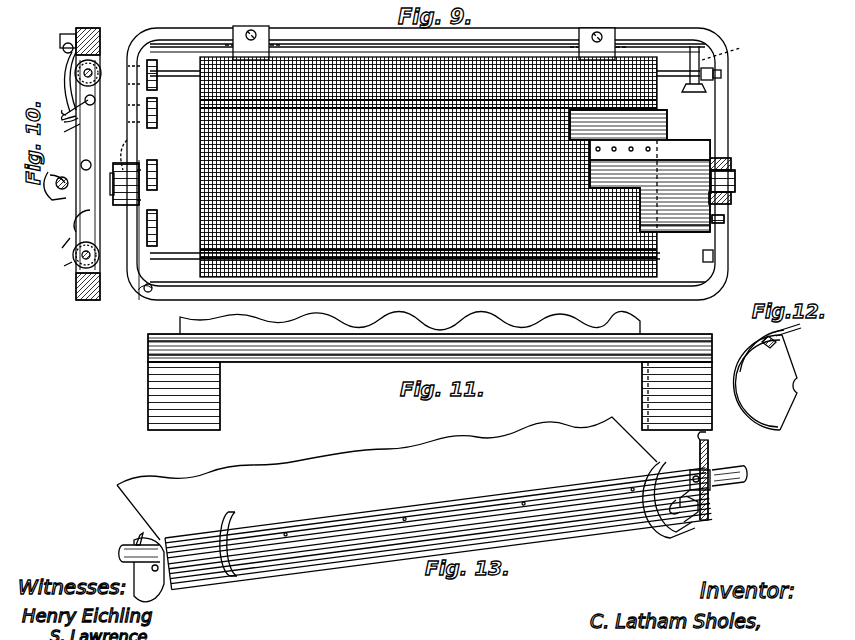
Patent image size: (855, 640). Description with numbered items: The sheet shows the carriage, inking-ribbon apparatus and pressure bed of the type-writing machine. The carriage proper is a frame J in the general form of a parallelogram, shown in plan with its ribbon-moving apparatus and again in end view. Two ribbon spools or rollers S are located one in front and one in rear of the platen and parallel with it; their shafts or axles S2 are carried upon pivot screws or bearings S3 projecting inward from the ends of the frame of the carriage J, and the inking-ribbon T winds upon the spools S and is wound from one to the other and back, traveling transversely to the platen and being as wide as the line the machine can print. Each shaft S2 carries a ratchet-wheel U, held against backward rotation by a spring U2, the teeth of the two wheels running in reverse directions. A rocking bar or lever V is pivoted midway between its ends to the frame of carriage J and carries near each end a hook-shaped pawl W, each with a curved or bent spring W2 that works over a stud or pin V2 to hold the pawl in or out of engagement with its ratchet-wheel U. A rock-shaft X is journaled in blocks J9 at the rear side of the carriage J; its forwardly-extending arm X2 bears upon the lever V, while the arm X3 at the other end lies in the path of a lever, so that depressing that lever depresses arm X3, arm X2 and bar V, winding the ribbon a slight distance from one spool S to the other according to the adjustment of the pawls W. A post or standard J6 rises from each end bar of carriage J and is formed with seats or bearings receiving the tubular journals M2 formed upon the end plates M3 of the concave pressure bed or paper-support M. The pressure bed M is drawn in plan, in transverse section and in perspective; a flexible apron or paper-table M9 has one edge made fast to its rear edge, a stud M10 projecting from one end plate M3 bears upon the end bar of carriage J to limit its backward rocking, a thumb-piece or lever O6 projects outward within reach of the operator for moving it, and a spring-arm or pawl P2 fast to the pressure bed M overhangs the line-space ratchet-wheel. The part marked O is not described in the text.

In FIG. 9, the carriage frame J is at (423, 158).
In FIG. 10, the carriage frame J is at (87, 173).
In FIG. 9, the post or standard J6 is at (743, 164).
In FIG. 9, the journal block J9 is at (262, 20).
In FIG. 9, the inking-ribbon T is at (428, 167).
In FIG. 9, the ribbon spool or roller S is at (509, 162).
In FIG. 9, the spool shaft or axle S2 is at (425, 165).
In FIG. 9, the pivot screw or bearing S3 is at (721, 74).
In FIG. 9, the rock-shaft X is at (178, 48).
In FIG. 10, the rock-shaft X is at (62, 46).
In FIG. 10, the forwardly-extending arm X2 is at (120, 92).
In FIG. 9, the arm X3 is at (735, 48).
In FIG. 9, the ratchet-wheel U is at (158, 66).
In FIG. 10, the ratchet-wheel U is at (75, 75).
In FIG. 9, the spring U2 is at (142, 292).
In FIG. 10, the spring U2 is at (70, 268).
In FIG. 9, the rocking bar or lever V is at (140, 183).
In FIG. 10, the rocking bar or lever V is at (66, 174).
In FIG. 9, the stud or pin V2 is at (158, 120).
In FIG. 10, the stud or pin V2 is at (91, 215).
In FIG. 10, the hook-shaped pawl W is at (68, 105).
In FIG. 10, the curved or bent spring W2 is at (76, 144).
In FIG. 9, the pressure bed or paper-support M is at (640, 171).
In FIG. 11, the pressure bed or paper-support M is at (534, 360).
In FIG. 13, the pressure bed or paper-support M is at (215, 595).
In FIG. 9, the tubular journal M2 is at (735, 182).
In FIG. 13, the tubular journal M2 is at (120, 552).
In FIG. 12, the end plate M3 is at (765, 380).
In FIG. 13, the end plate M3 is at (182, 639).
In FIG. 11, the flexible apron or paper-table M9 is at (555, 330).
In FIG. 12, the flexible apron or paper-table M9 is at (791, 336).
In FIG. 13, the flexible apron or paper-table M9 is at (387, 478).
In FIG. 9, the stud M10 is at (724, 220).
In FIG. 13, the paper guide ring O is at (236, 514).
In FIG. 13, the thumb-piece or lever O6 is at (720, 508).
In FIG. 13, the spring-arm or pawl P2 is at (708, 450).